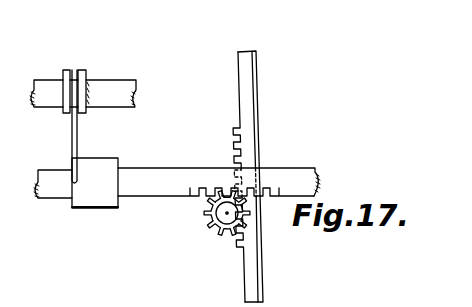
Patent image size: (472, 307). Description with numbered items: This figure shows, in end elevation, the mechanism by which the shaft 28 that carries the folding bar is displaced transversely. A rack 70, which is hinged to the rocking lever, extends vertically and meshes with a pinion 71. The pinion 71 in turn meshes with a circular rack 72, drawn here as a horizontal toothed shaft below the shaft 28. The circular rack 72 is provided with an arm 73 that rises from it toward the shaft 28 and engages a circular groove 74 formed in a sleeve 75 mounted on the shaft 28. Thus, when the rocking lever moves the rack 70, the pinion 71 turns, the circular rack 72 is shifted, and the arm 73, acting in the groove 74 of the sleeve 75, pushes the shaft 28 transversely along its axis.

The shaft 28 is at (118, 100).
The rack 70 is at (250, 120).
The pinion 71 is at (205, 215).
The circular rack 72 is at (58, 190).
The arm 73 is at (72, 135).
The circular groove 74 is at (71, 78).
The sleeve 75 is at (88, 73).